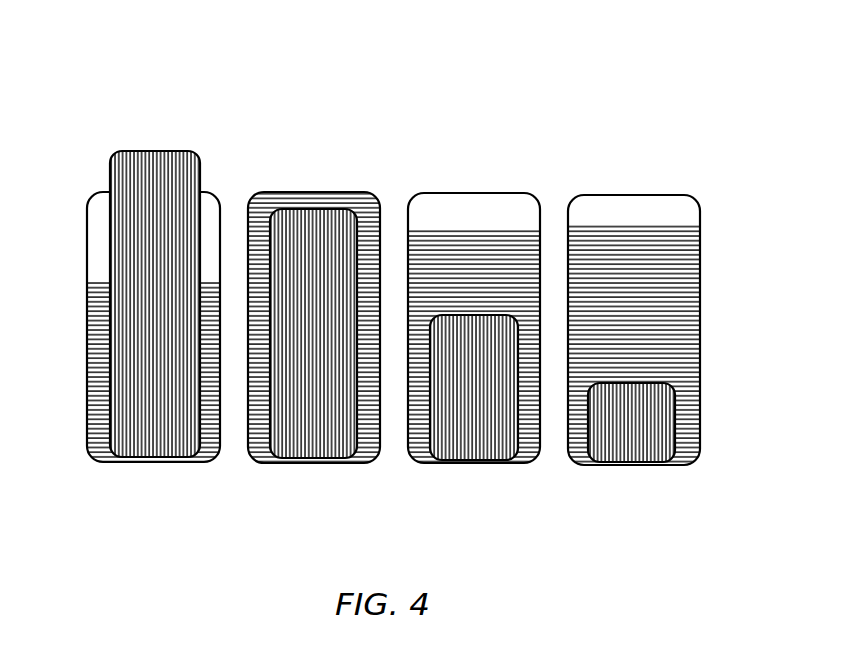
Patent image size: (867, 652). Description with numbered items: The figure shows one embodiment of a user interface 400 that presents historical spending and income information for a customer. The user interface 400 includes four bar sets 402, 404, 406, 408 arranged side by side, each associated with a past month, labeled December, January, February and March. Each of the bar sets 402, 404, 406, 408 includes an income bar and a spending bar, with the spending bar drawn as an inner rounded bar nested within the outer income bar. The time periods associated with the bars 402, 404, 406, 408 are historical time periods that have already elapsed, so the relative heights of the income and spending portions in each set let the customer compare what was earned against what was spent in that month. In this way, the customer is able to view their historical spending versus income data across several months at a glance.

The user interface 400 is at (396, 271).
The bar set 402 is at (128, 286).
The bar set 404 is at (306, 317).
The bar set 406 is at (478, 322).
The bar set 408 is at (663, 311).